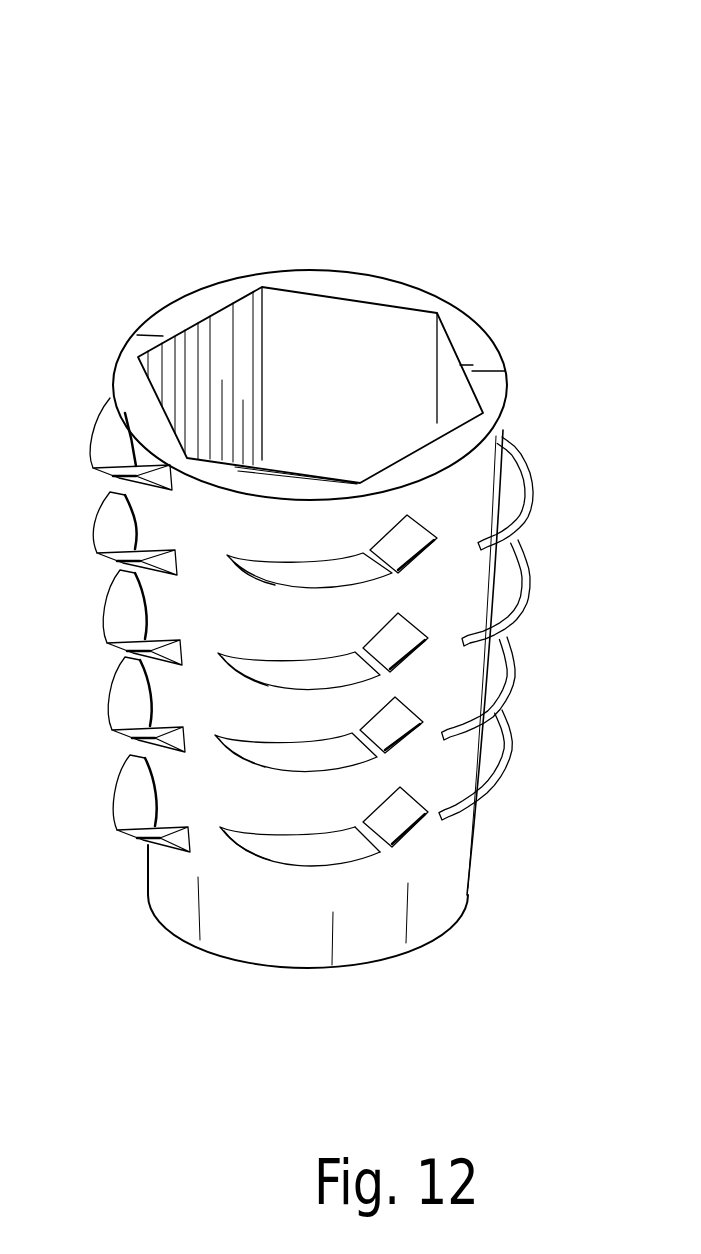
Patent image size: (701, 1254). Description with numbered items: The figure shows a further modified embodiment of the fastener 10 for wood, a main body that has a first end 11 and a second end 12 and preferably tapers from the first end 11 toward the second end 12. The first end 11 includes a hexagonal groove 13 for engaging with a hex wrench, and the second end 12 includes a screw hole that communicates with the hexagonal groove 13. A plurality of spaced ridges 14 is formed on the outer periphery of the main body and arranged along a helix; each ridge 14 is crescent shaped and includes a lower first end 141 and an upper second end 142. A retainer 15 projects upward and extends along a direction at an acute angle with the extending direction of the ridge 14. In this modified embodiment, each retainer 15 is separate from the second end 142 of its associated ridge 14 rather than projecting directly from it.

The fastener 10 is at (322, 552).
The first end 11 is at (480, 360).
The second end 12 is at (420, 918).
The hexagonal groove 13 is at (363, 353).
The ridge 14 is at (294, 823).
The first end of ridge 141 is at (250, 837).
The second end of ridge 142 is at (370, 852).
The retainer 15 is at (403, 808).